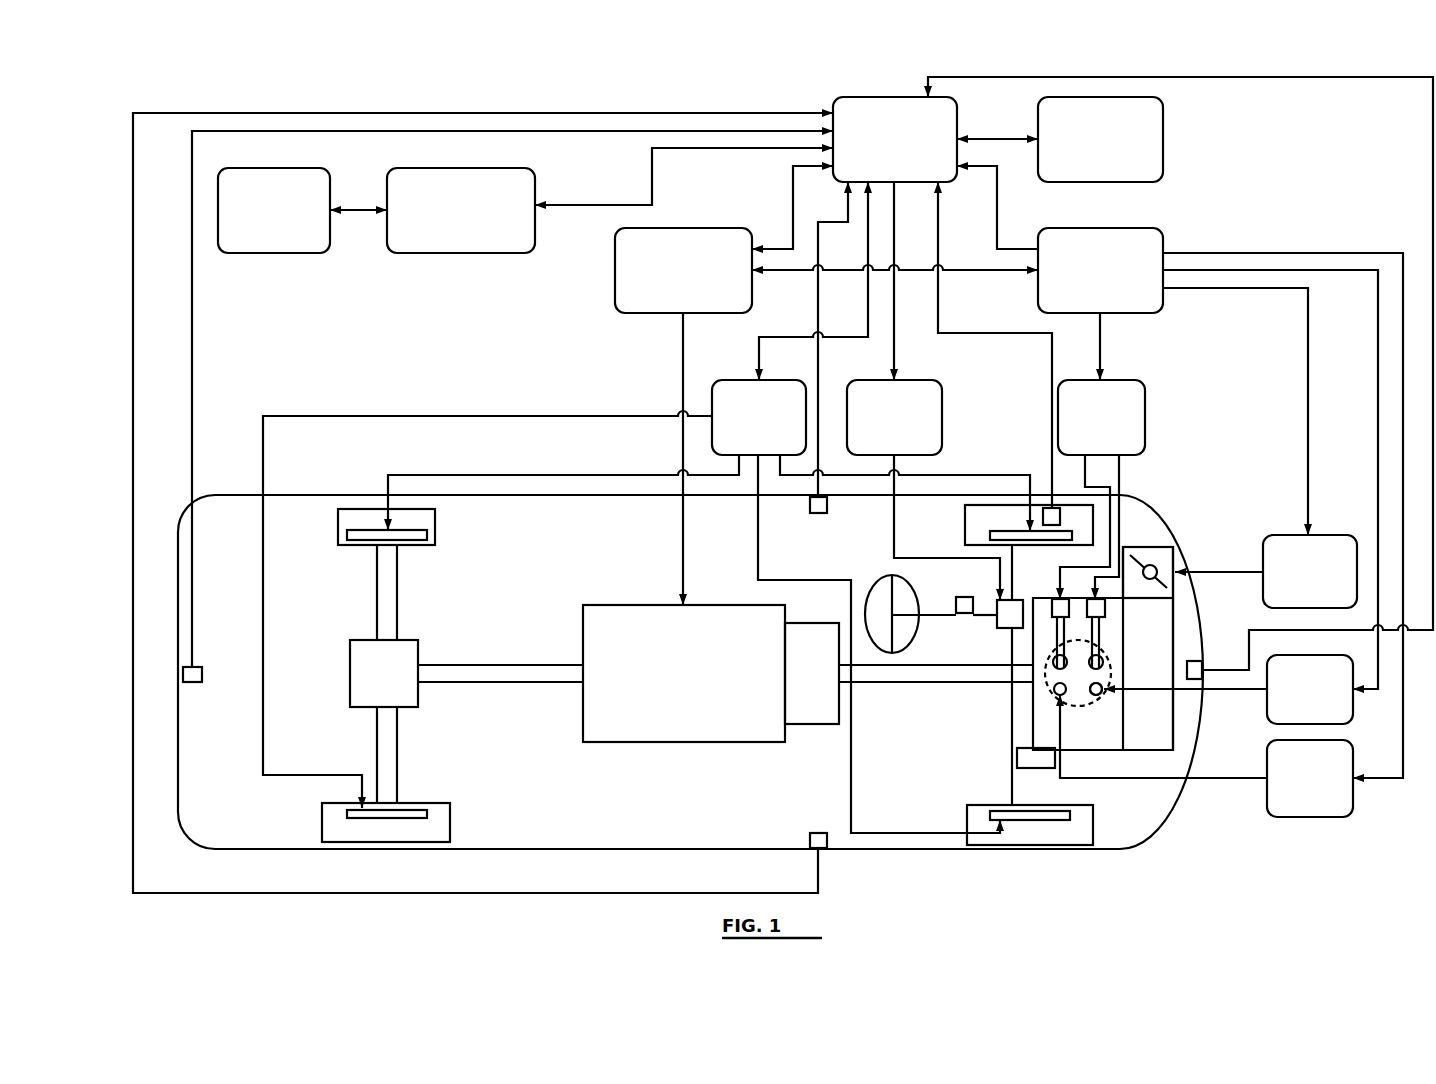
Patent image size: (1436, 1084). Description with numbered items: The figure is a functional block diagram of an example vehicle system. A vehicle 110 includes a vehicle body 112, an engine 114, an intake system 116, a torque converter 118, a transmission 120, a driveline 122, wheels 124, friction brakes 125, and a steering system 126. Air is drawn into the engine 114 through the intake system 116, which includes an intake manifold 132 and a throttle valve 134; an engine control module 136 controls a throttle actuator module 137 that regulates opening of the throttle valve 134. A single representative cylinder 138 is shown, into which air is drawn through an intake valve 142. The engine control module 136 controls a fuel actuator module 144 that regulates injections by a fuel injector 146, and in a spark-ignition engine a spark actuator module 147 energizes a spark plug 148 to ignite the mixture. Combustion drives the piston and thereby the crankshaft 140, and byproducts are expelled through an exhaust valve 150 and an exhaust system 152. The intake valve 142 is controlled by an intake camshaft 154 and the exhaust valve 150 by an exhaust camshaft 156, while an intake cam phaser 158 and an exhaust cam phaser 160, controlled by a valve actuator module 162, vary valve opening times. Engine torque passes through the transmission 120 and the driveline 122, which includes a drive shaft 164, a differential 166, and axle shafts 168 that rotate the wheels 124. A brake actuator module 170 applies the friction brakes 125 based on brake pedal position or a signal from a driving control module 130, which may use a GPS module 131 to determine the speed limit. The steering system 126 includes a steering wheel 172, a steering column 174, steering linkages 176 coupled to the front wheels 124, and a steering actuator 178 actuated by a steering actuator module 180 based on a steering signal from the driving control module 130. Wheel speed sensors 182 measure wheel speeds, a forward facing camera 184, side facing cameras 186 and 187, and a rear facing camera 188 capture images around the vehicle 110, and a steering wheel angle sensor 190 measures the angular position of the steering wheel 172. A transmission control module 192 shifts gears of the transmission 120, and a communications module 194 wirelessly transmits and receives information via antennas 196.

The vehicle 110 is at (127, 94).
The vehicle body 112 is at (312, 492).
The engine 114 is at (1076, 757).
The intake system 116 is at (1181, 558).
The torque converter 118 is at (812, 725).
The transmission 120 is at (683, 742).
The driveline 122 is at (524, 616).
The wheels 124 is at (338, 525).
The friction brakes 125 is at (367, 530).
The steering system 126 is at (875, 545).
The driving control module (DCM) 130 is at (962, 110).
The global positioning system (GPS) module 131 is at (1165, 139).
The intake manifold 132 is at (1175, 643).
The throttle valve 134 is at (1152, 546).
The engine control module (ECM) 136 is at (1102, 227).
The throttle actuator module 137 is at (1285, 535).
The cylinder 138 is at (1104, 662).
The crankshaft 140 is at (908, 680).
The intake valve 142 is at (1050, 667).
The fuel actuator module 144 is at (1265, 715).
The fuel injector 146 is at (1102, 694).
The spark actuator module 147 is at (1265, 800).
The spark plug 148 is at (1065, 695).
The exhaust valve 150 is at (1103, 670).
The exhaust system 152 is at (1040, 771).
The intake camshaft 154 is at (1057, 637).
The exhaust camshaft 156 is at (1100, 636).
The intake cam phaser 158 is at (1060, 598).
The exhaust cam phaser 160 is at (1105, 608).
The valve actuator module 162 is at (1127, 380).
The drive shaft 164 is at (500, 683).
The differential 166 is at (350, 675).
The axle shafts 168 is at (377, 592).
The brake actuator module 170 is at (745, 377).
The steering wheel 172 is at (877, 578).
The steering column 174 is at (943, 610).
The steering linkages 176 is at (1012, 575).
The steering actuator 178 is at (997, 595).
The steering actuator module 180 is at (872, 377).
The wheel speed sensors 182 is at (1046, 507).
The forward facing camera 184 is at (1200, 661).
The side facing camera 186 is at (812, 514).
The side facing camera 187 is at (810, 833).
The rear facing camera 188 is at (203, 667).
The steering wheel angle sensor 190 is at (963, 616).
The transmission control module (TCM) 192 is at (684, 226).
The communications module 194 is at (470, 255).
The antennas 196 is at (275, 255).